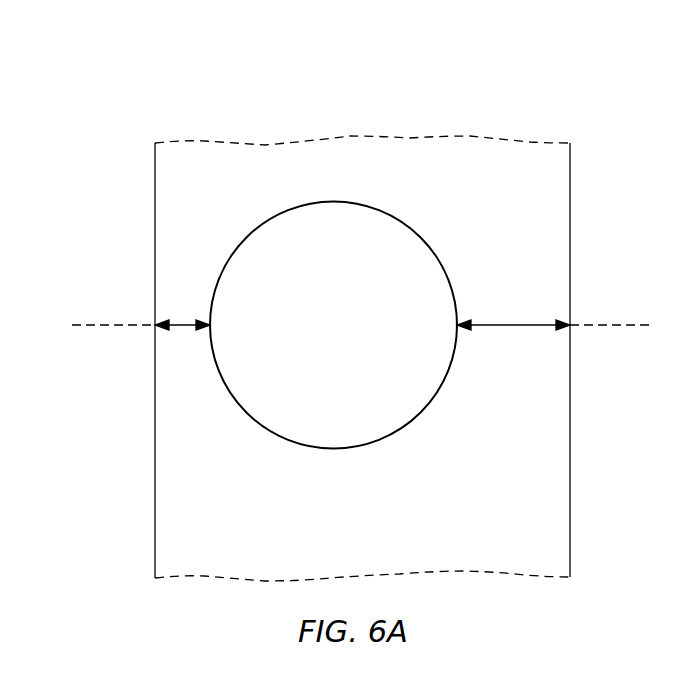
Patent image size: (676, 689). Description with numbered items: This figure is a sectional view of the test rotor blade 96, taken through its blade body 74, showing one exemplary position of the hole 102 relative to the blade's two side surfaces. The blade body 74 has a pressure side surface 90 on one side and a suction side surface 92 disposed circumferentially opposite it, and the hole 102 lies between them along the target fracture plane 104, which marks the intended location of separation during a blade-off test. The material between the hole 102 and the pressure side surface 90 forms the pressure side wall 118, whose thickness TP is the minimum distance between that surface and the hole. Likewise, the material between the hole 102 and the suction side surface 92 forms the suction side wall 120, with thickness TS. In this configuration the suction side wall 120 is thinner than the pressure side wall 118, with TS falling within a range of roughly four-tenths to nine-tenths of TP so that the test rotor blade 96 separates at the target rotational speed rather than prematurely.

The test rotor blade 96 is at (527, 103).
The blade body 74 is at (468, 177).
The suction side surface 92 is at (155, 217).
The pressure side surface 90 is at (570, 211).
The hole 102 is at (346, 337).
The target fracture plane 104 is at (112, 322).
The suction side wall 120 is at (180, 340).
The pressure side wall 118 is at (517, 342).